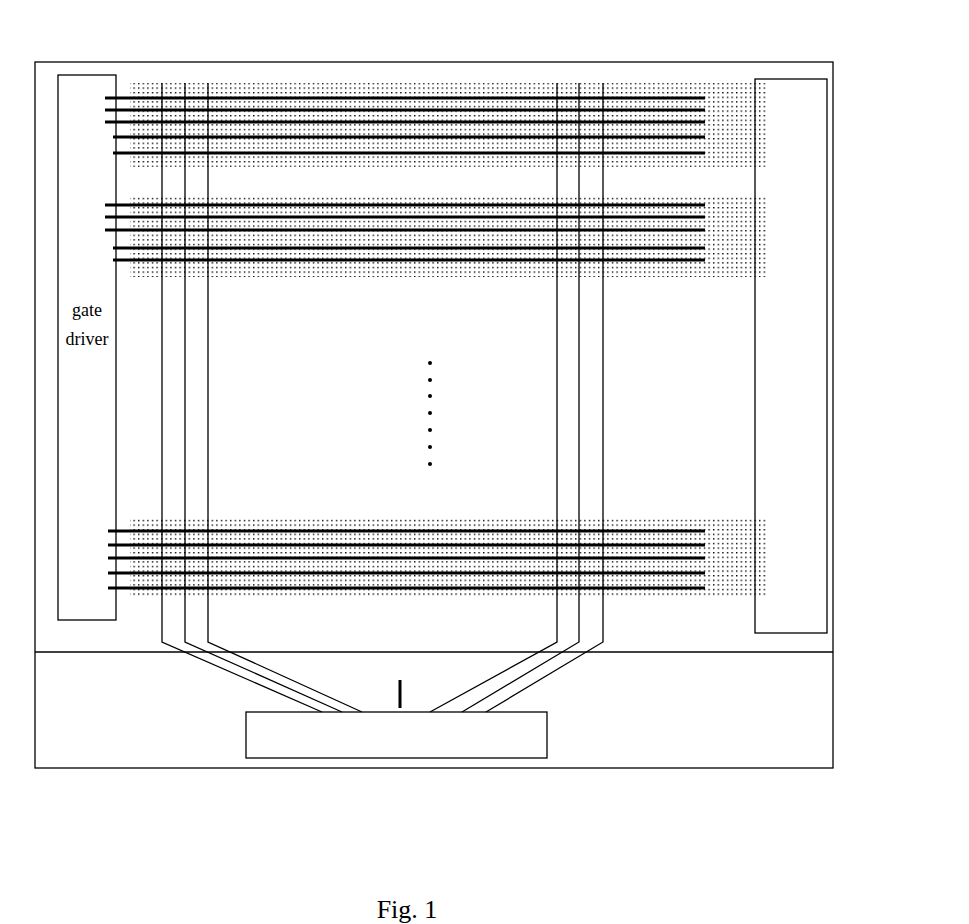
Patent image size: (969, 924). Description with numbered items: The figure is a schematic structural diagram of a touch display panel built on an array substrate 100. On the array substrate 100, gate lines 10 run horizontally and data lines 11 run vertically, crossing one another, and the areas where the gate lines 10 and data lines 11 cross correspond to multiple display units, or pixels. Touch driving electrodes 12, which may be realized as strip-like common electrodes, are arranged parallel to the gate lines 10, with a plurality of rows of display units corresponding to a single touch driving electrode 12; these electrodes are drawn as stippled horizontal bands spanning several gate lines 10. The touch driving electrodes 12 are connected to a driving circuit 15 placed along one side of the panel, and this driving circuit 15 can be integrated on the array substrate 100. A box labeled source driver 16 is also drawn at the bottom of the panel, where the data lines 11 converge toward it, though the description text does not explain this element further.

The gate line 10 is at (452, 303).
The data line 11 is at (426, 397).
The touch driving electrode 12 is at (448, 305).
The driving circuit 15 is at (812, 356).
The source driver 16 is at (351, 737).
The array substrate 100 is at (434, 434).